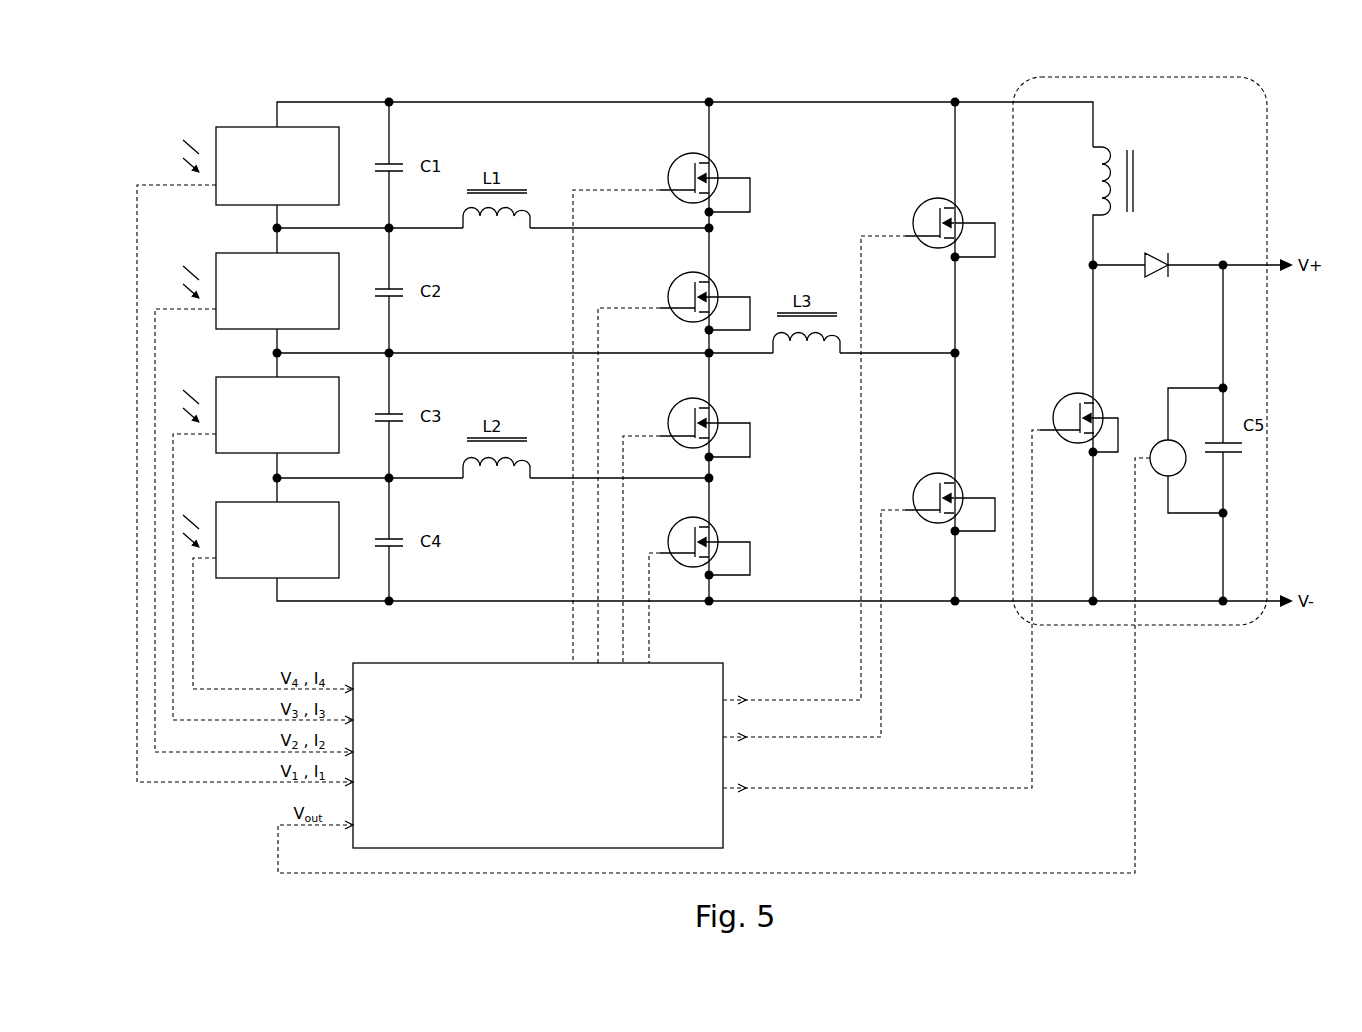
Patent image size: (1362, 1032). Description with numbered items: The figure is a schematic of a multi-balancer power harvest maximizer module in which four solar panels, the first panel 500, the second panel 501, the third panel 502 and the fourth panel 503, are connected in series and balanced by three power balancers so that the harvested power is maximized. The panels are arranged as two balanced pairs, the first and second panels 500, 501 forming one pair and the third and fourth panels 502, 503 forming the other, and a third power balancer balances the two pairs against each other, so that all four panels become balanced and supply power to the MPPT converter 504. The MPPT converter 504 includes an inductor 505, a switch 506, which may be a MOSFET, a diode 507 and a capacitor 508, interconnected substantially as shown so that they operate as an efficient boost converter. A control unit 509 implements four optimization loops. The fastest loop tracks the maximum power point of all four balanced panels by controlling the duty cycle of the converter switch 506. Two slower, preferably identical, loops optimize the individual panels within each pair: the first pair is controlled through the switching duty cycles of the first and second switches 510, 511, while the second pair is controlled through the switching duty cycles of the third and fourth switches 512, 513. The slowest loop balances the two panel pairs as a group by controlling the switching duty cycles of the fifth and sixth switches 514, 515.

The solar panel PV1 500 is at (233, 127).
The solar panel PV2 501 is at (233, 253).
The solar panel PV3 502 is at (233, 377).
The solar panel PV4 503 is at (233, 502).
The MPPT converter 504 is at (1142, 77).
The inductor L4 505 is at (1103, 183).
The switch SW7 506 is at (1103, 406).
The diode D1 507 is at (1174, 246).
The capacitor C5 508 is at (1219, 441).
The control unit 509 is at (492, 663).
The switch SW1 510 is at (720, 170).
The switch SW2 511 is at (720, 289).
The switch SW3 512 is at (720, 415).
The switch SW4 513 is at (720, 534).
The switch SW5 514 is at (916, 212).
The switch SW6 515 is at (920, 482).